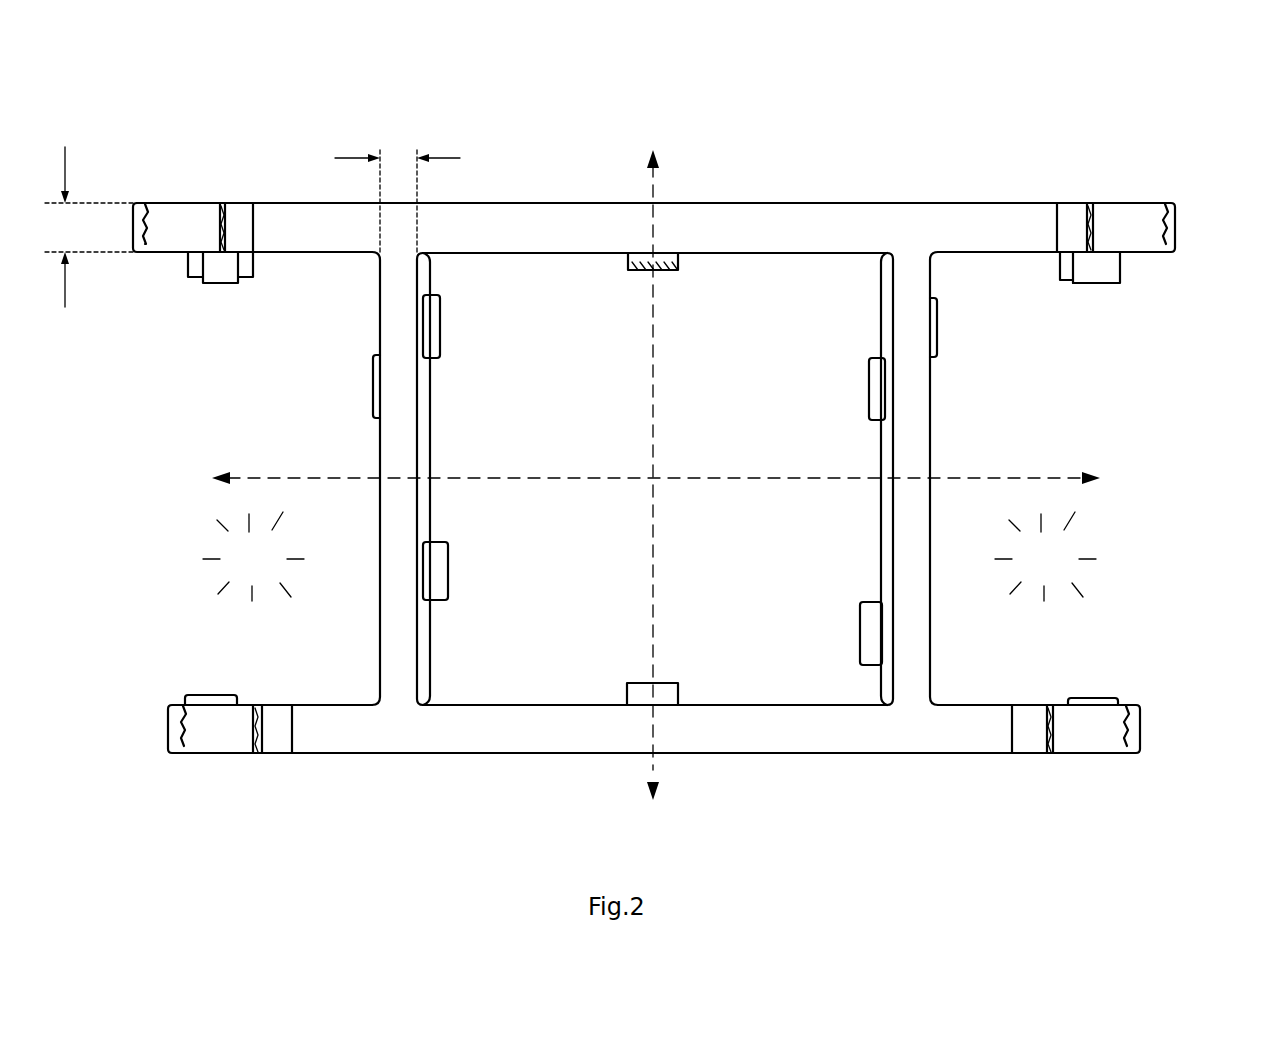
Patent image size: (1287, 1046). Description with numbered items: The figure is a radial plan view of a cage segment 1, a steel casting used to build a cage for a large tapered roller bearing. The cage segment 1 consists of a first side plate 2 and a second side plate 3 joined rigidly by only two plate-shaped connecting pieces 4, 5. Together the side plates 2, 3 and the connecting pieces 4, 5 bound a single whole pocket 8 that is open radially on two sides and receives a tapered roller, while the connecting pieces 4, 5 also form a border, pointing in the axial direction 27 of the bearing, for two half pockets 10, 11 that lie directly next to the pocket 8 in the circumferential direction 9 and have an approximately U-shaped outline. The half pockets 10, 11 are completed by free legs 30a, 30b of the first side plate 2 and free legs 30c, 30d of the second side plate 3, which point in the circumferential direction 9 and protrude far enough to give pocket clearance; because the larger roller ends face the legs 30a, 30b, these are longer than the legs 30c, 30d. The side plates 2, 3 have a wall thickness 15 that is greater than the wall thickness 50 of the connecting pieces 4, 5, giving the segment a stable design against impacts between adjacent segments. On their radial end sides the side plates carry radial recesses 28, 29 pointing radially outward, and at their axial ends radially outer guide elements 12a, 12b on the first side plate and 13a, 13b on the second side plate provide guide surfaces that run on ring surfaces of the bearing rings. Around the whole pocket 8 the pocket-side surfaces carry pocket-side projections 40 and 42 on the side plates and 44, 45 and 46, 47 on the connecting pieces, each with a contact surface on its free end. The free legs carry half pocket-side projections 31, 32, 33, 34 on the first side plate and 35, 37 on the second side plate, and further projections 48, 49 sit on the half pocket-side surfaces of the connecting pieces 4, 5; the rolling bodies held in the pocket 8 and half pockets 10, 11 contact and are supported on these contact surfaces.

The cage segment 1 is at (1210, 159).
The first side plate 2 is at (742, 203).
The second side plate 3 is at (500, 755).
The first connecting piece 4 is at (395, 640).
The second connecting piece 5 is at (913, 288).
The pocket 8 is at (580, 372).
The circumferential direction 9 is at (1028, 476).
The first half pocket 10 is at (253, 556).
The second half pocket 11 is at (1045, 556).
The radially outer guide element on the first side plate 12a is at (198, 218).
The radially outer guide element on the first side plate 12b is at (1123, 228).
The radially outer guide element on the second side plate 13a is at (218, 733).
The radially outer guide element on the second side plate 13b is at (1087, 735).
The wall thickness of the side plates 15 is at (89, 227).
The axial direction 27 is at (655, 558).
The radial recess on the first side plate 28 is at (507, 241).
The radial recess on the second side plate 29 is at (727, 739).
The first free leg on the first side plate 30a is at (153, 203).
The second free leg on the first side plate 30b is at (1015, 205).
The first free leg on the second side plate 30c is at (168, 752).
The second free leg on the second side plate 30d is at (990, 755).
The half pocket-side projection on the first side plate 31 is at (190, 260).
The half pocket-side projection on the first side plate 32 is at (255, 263).
The half pocket-side projection on the first side plate 33 is at (1122, 266).
The half pocket-side projection on the first side plate 34 is at (1058, 264).
The half pocket-side projection on the second side plate 35 is at (200, 694).
The half pocket-side projection on the second side plate 37 is at (1095, 697).
The pocket-side projection on the first side plate 40 is at (660, 272).
The pocket-side projection on the second side plate 42 is at (645, 683).
The pocket-side projection on the first connecting piece 44 is at (440, 322).
The pocket-side projection on the first connecting piece 45 is at (448, 565).
The pocket-side projection on the second connecting piece 46 is at (868, 388).
The pocket-side projection on the second connecting piece 47 is at (858, 640).
The half pocket-side projection on the first connecting piece 48 is at (373, 380).
The half pocket-side projection on the second connecting piece 49 is at (937, 355).
The wall thickness of the connecting pieces 50 is at (397, 199).